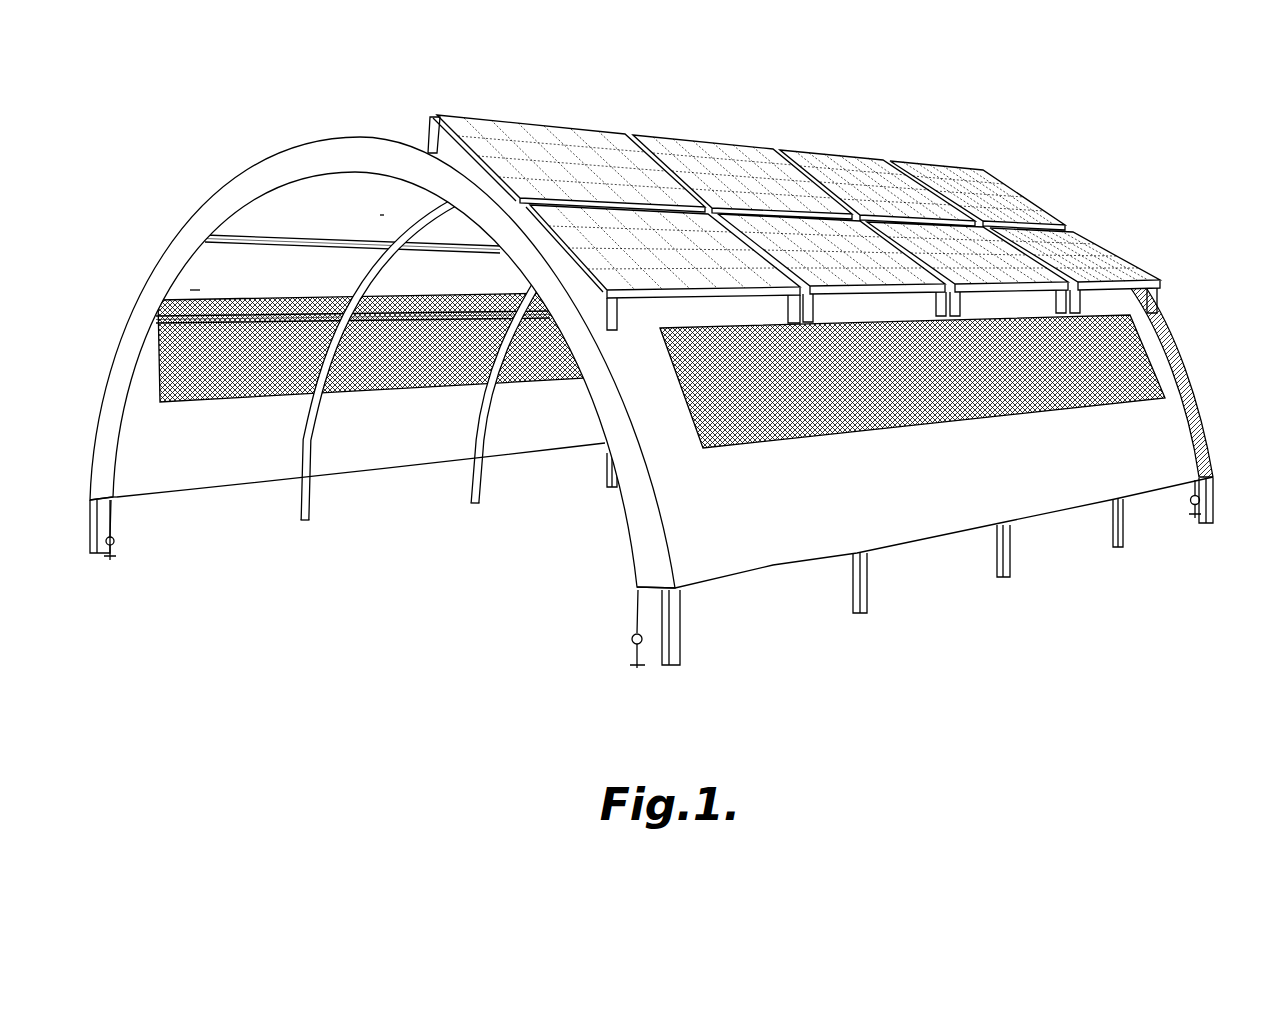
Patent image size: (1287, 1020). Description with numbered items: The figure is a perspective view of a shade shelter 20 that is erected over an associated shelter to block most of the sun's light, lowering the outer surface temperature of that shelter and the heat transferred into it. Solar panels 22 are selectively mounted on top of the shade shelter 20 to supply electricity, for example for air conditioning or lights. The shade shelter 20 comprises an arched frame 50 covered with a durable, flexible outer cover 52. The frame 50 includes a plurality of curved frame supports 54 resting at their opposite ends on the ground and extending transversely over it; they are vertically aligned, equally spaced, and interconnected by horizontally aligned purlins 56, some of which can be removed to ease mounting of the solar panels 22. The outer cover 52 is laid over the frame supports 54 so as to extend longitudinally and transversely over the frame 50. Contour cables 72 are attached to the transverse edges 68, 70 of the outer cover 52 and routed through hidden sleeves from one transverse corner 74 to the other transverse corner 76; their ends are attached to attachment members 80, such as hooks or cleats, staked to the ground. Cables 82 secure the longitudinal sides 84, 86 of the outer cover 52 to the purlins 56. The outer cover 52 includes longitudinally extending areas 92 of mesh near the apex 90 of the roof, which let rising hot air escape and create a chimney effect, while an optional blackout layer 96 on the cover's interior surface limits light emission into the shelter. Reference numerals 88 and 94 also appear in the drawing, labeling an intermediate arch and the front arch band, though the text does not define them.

The shade shelter 20 is at (660, 374).
The solar panels 22 is at (1045, 188).
The frame 50 is at (383, 213).
The outer cover 52 is at (1183, 430).
The frame supports 54 is at (307, 520).
The purlins 56 is at (250, 230).
The transverse edge 68 is at (628, 536).
The transverse edge 70 is at (123, 462).
The contour cables 72 is at (112, 527).
The transverse corner 74 is at (115, 498).
The transverse corner 76 is at (637, 587).
The attachment members 80 is at (113, 552).
The cables 82 is at (197, 293).
The longitudinal side 84 is at (220, 448).
The longitudinal side 86 is at (718, 556).
The intermediate hoop 88 is at (335, 445).
The apex 90 is at (385, 357).
The longitudinally extending areas of mesh 92 is at (187, 355).
The arch cover band 94 is at (252, 160).
The blackout layer 96 is at (388, 452).